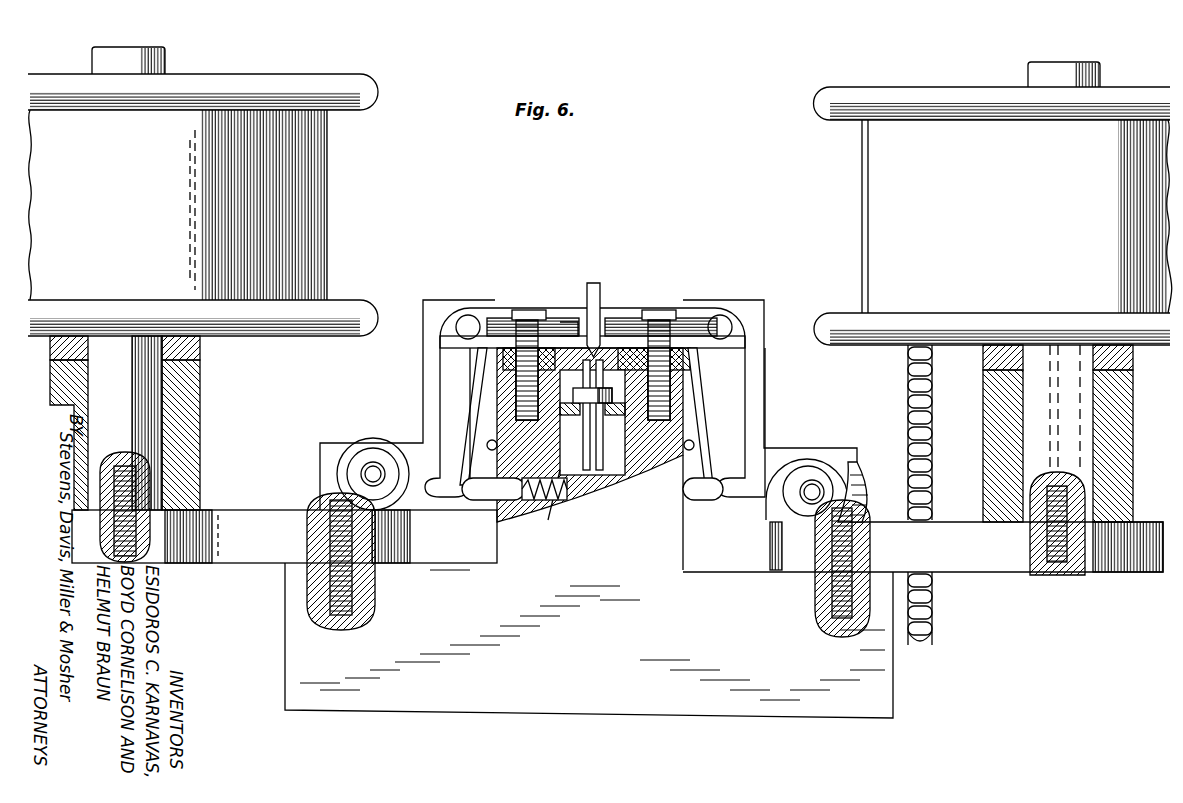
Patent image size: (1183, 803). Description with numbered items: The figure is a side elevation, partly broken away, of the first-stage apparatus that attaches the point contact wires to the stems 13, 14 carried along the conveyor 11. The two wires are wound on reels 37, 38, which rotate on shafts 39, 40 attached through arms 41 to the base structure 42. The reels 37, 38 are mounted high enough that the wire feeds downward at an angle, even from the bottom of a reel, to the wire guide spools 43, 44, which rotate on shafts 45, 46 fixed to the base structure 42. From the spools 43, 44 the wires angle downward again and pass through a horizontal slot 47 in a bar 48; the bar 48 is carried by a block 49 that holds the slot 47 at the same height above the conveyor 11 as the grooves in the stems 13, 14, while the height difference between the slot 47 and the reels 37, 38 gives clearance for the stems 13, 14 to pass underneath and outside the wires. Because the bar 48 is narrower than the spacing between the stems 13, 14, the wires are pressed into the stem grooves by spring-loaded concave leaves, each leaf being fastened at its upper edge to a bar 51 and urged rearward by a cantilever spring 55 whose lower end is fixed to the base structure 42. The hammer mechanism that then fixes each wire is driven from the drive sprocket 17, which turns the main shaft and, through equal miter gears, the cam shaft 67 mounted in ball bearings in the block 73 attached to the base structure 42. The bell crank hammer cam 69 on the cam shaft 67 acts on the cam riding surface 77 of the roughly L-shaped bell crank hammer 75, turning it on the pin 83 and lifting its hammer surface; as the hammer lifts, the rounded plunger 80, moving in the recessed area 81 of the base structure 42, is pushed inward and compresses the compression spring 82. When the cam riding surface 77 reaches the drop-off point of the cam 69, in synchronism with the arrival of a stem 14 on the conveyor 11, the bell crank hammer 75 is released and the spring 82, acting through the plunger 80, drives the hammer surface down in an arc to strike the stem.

The conveyor 11 is at (618, 413).
The stem 13 is at (586, 472).
The stem 14 is at (599, 472).
The drive sprocket 17 is at (932, 385).
The reel 37 is at (875, 178).
The reel 38 is at (326, 206).
The shaft 39 is at (1055, 62).
The shaft 40 is at (140, 48).
The arm 41 is at (236, 548).
The base structure 42 is at (589, 640).
The wire guide spool 43 is at (612, 318).
The wire guide spool 44 is at (478, 318).
The shaft 45 is at (658, 310).
The shaft 46 is at (520, 310).
The horizontal slot 47 is at (582, 318).
The bar 48 is at (594, 283).
The block 49 is at (570, 314).
The bar 51 is at (745, 342).
The cantilever spring 55 is at (698, 410).
The cam shaft 67 is at (812, 482).
The bell crank hammer cam 69 is at (862, 480).
The block 73 is at (848, 472).
The bell crank hammer 75 is at (682, 308).
The cam riding surface 77 is at (760, 500).
The plunger 80 is at (480, 500).
The recessed area 81 is at (560, 503).
The compression spring 82 is at (540, 502).
The pin 83 is at (724, 318).